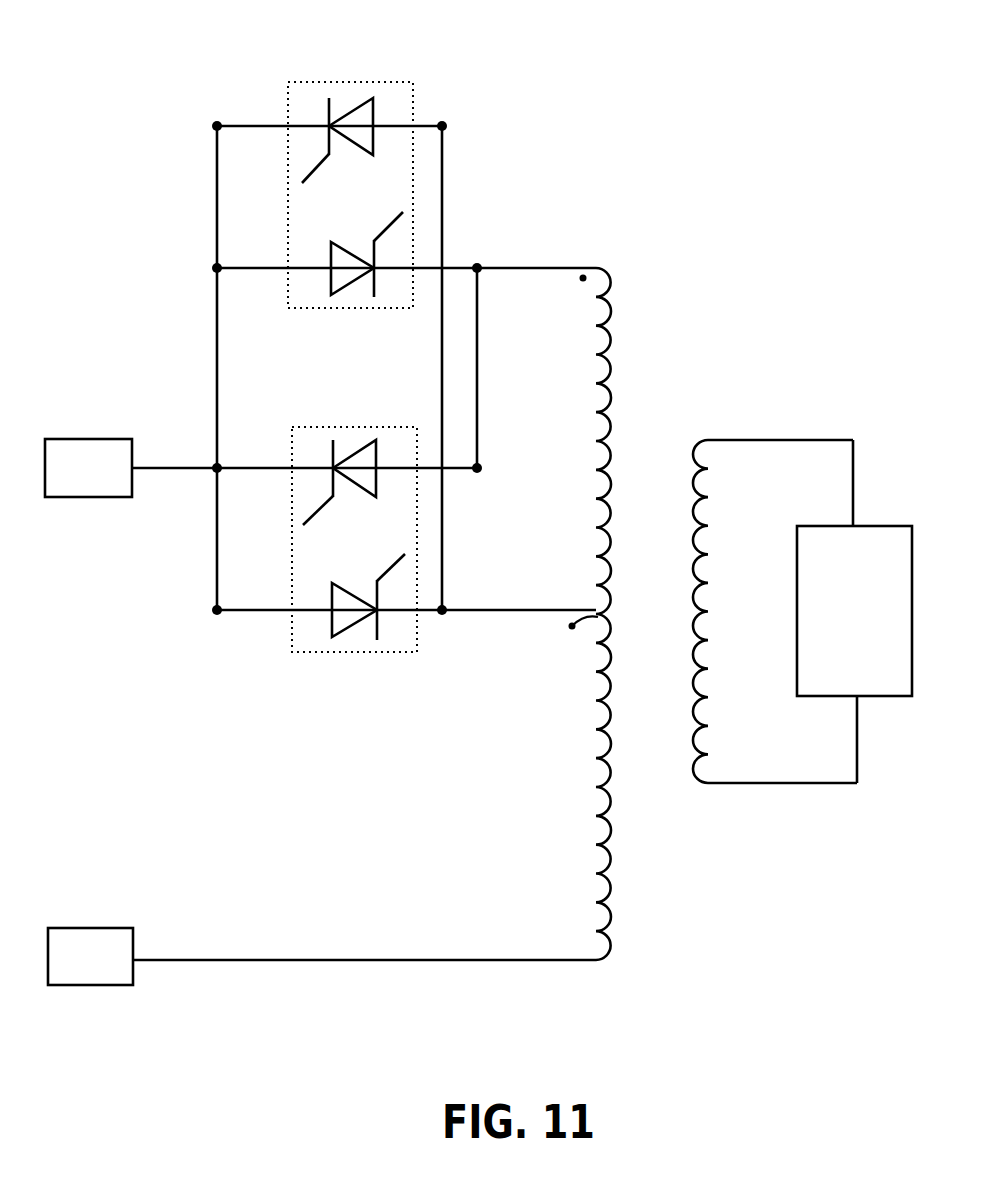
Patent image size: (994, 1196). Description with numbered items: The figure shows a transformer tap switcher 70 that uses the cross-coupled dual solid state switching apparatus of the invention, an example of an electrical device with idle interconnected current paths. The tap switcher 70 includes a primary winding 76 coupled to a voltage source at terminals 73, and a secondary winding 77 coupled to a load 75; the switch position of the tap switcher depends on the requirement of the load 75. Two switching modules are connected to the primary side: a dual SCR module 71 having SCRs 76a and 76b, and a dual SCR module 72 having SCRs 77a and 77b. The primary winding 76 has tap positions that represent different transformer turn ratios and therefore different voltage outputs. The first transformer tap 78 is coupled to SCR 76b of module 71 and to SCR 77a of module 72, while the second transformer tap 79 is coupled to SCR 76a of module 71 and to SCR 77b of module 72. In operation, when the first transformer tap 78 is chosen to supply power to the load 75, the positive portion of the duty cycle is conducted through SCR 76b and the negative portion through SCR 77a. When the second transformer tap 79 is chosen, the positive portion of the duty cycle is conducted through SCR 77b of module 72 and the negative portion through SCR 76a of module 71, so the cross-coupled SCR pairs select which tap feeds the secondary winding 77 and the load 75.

The transformer tap switcher 70 is at (680, 95).
The dual SCR module 71 is at (371, 207).
The dual SCR module 72 is at (359, 561).
The terminals 73 is at (108, 483).
The load 75 is at (890, 633).
The primary winding 76 is at (608, 945).
The SCR 76a is at (362, 100).
The SCR 76b is at (337, 296).
The secondary winding 77 is at (692, 783).
The SCR 77a is at (363, 448).
The SCR 77b is at (337, 637).
The first transformer tap 78 is at (588, 266).
The second transformer tap 79 is at (598, 617).